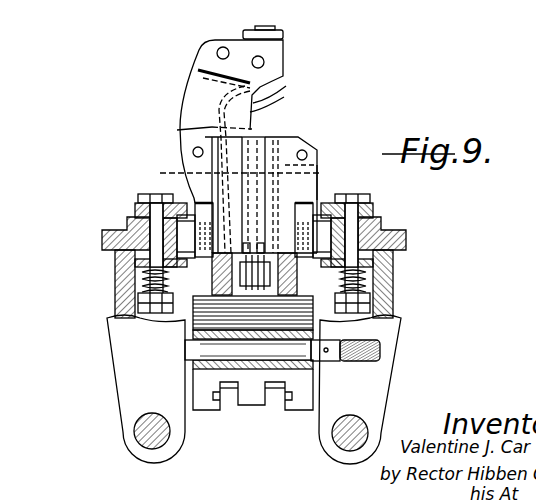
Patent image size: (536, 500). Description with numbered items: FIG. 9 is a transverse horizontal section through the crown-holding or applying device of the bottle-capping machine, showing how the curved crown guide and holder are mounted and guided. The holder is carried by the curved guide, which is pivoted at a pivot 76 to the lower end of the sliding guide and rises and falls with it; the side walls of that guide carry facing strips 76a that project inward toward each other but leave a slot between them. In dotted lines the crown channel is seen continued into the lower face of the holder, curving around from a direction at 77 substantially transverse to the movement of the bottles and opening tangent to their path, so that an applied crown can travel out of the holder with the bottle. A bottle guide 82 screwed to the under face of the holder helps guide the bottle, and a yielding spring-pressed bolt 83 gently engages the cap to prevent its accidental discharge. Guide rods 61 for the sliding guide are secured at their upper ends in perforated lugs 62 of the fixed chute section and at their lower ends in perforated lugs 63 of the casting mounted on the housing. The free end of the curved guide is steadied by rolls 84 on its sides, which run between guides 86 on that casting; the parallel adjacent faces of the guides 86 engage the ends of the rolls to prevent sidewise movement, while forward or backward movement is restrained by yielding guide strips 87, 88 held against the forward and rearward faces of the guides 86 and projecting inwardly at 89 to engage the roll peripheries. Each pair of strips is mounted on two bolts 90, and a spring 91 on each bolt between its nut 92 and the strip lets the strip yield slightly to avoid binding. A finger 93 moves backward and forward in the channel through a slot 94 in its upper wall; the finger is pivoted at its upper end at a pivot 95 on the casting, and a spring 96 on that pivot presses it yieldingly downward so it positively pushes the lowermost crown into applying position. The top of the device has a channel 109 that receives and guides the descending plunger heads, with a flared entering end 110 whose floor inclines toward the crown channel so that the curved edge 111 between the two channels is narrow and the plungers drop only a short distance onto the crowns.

The guide rods 61 is at (142, 424).
The perforated lugs 62 is at (391, 4).
The perforated lugs 63 is at (125, 441).
The pivot 76 is at (305, 369).
The facing strips 76a is at (222, 408).
The channel direction 77 is at (224, 209).
The bottle guide 82 is at (151, 4).
The spring-pressed bolt 83 is at (270, 26).
The rolls 84 is at (138, 261).
The guides 86 is at (160, 223).
The yielding guide strip 87 is at (142, 210).
The yielding guide strip 88 is at (118, 268).
The inward projection 89 is at (184, 214).
The bolts 90 is at (150, 238).
The spring 91 is at (140, 288).
The nut 92 is at (137, 312).
The finger 93 is at (266, 137).
The slot 94 is at (320, 166).
The pivot 95 is at (202, 296).
The spring 96 is at (250, 292).
The channel 109 is at (276, 87).
The flared entering end 110 is at (195, 90).
The curved edge 111 is at (272, 103).